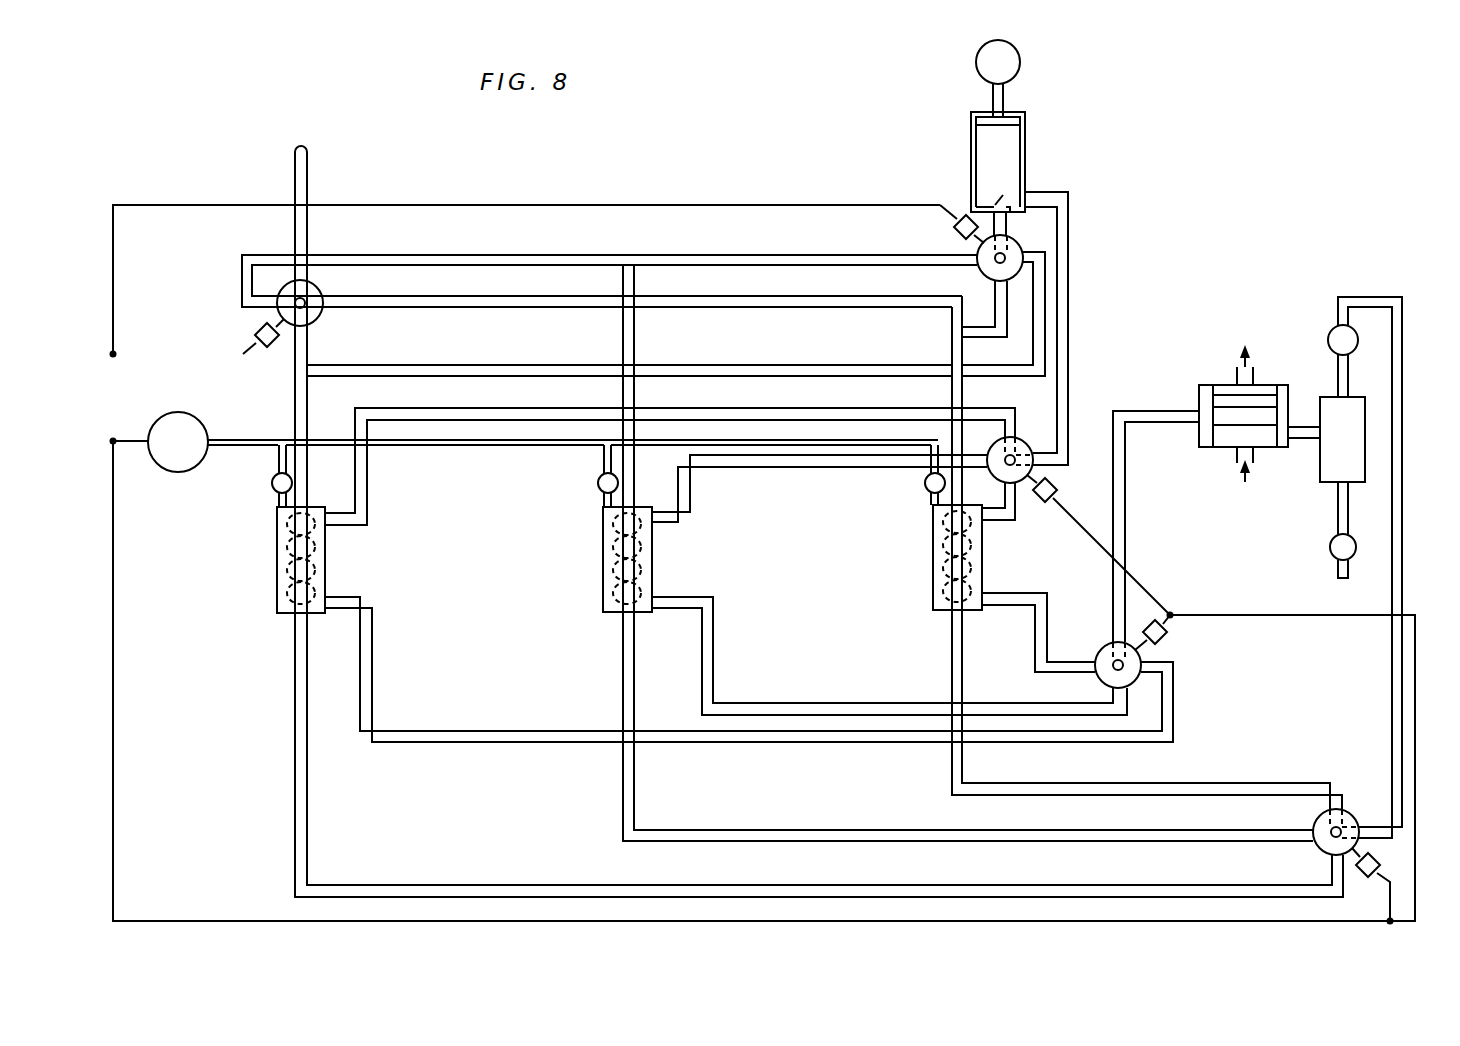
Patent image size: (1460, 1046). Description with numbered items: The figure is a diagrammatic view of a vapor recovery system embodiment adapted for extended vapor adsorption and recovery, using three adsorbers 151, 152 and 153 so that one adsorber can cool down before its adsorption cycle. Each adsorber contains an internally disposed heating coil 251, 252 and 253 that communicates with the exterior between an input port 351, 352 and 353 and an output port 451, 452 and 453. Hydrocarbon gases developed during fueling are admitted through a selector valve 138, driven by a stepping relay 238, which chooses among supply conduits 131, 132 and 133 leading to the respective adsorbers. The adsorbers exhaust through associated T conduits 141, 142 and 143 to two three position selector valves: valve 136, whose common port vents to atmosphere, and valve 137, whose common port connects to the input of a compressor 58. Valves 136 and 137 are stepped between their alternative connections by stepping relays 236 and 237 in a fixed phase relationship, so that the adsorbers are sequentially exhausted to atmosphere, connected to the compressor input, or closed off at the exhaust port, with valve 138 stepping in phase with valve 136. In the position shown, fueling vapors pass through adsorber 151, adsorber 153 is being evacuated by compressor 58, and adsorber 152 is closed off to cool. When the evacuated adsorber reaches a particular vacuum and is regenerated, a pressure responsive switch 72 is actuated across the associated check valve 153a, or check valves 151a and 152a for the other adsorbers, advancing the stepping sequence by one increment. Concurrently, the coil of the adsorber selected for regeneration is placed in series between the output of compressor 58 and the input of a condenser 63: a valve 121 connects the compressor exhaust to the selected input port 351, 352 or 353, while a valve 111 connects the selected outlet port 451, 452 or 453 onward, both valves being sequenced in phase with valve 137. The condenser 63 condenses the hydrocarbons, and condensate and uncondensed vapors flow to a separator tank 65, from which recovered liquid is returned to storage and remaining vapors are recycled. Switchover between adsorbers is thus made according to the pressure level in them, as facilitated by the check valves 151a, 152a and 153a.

The compressor 58 is at (1028, 142).
The condenser 63 is at (1272, 384).
The separator tank 65 is at (1320, 478).
The pressure responsive switch 72 is at (181, 412).
The valve 111 is at (1141, 658).
The valve 121 is at (1033, 447).
The supply conduit 131 is at (308, 837).
The supply conduit 132 is at (636, 802).
The supply conduit 133 is at (968, 766).
The three position selector valve 136 is at (322, 293).
The three position selector valve 137 is at (978, 276).
The selector valve 138 is at (1355, 809).
The T conduit 141 is at (373, 357).
The T conduit 142 is at (602, 256).
The T conduit 143 is at (950, 340).
The adsorber 151 is at (325, 557).
The adsorber 152 is at (654, 561).
The third adsorber 153 is at (930, 556).
The check valve 151a is at (272, 485).
The check valve 152a is at (598, 485).
The check valve 153a is at (925, 485).
The stepping relay 236 is at (268, 349).
The stepping relay 237 is at (960, 217).
The stepping relay 238 is at (1362, 877).
The heating coil 251 is at (290, 561).
The heating coil 252 is at (615, 565).
The heating coil 253 is at (932, 590).
The input port 351 is at (327, 525).
The input port 352 is at (652, 520).
The input port 353 is at (982, 518).
The output port 451 is at (327, 597).
The output port 452 is at (655, 612).
The output port 453 is at (986, 612).